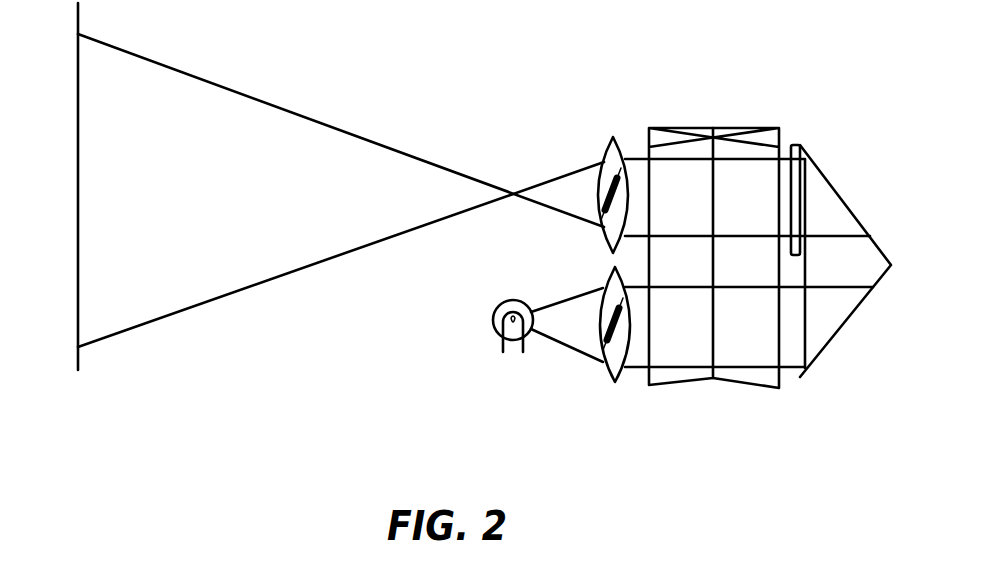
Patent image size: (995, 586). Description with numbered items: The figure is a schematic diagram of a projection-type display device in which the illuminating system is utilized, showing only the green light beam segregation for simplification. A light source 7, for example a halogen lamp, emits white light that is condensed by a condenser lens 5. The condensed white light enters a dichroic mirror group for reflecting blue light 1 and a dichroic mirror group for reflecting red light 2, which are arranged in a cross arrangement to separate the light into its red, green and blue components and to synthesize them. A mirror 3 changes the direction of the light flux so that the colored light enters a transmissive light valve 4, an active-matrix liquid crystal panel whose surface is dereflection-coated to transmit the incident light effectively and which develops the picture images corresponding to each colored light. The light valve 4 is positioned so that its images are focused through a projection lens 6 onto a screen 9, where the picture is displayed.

The dichroic mirror group for reflecting blue light 1 is at (677, 128).
The dichroic mirror group for reflecting red light 2 is at (751, 128).
The mirror 3 is at (846, 203).
The transmissive light valve 4 is at (802, 143).
The condenser lens 5 is at (612, 375).
The projection lens 6 is at (604, 151).
The light source 7 is at (501, 300).
The screen 9 is at (77, 338).